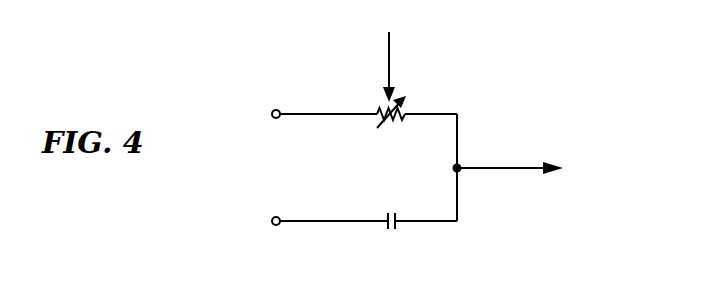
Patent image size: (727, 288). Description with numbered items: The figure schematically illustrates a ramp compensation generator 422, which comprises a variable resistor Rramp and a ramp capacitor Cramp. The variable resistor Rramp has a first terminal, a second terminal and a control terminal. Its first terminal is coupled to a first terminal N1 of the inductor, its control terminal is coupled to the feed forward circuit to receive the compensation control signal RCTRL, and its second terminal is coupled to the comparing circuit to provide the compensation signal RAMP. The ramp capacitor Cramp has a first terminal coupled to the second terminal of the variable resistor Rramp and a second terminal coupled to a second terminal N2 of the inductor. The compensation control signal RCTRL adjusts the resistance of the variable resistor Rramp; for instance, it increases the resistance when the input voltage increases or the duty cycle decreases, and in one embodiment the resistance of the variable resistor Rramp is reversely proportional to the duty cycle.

The ramp compensation generator 422 is at (527, 55).
The first terminal of the inductor N1 is at (309, 114).
The second terminal of the inductor N2 is at (315, 221).
The variable resistor Rramp is at (412, 125).
The ramp capacitor Cramp is at (413, 233).
The compensation control signal RCTRL is at (418, 67).
The compensation signal RAMP is at (510, 157).